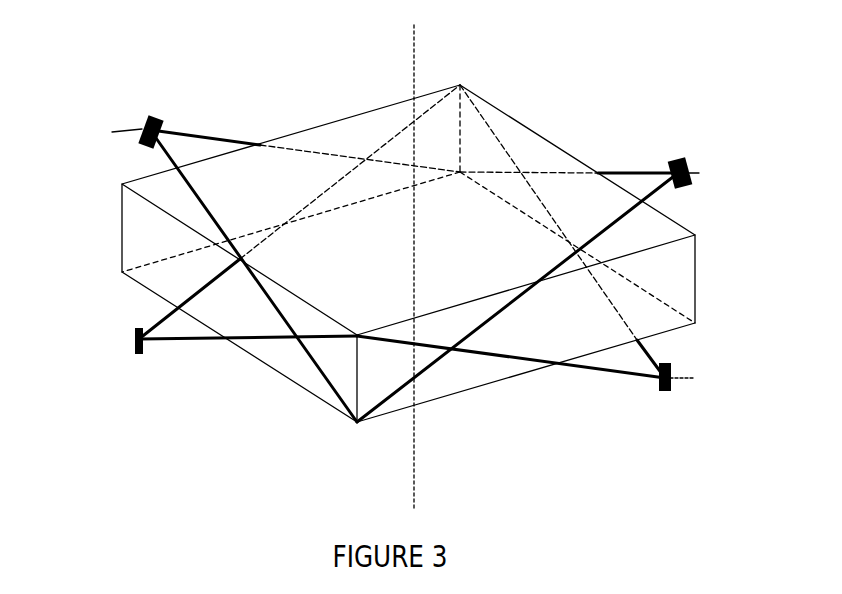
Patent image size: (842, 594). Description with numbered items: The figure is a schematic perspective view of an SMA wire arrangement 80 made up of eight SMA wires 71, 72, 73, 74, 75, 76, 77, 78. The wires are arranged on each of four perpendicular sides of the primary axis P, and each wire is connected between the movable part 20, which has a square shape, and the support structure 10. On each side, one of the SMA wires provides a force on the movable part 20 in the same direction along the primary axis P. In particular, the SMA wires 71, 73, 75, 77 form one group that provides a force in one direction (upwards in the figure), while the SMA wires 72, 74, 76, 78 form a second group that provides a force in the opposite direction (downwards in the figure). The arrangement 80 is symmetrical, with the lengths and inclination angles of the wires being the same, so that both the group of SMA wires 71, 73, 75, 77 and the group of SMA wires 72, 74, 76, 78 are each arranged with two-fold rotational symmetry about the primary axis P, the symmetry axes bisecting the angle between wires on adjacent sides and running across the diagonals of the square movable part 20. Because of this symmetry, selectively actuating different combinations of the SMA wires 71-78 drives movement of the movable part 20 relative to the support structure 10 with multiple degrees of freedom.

The support structure 10 is at (725, 208).
The movable part 20 is at (670, 278).
The SMA wire 71 is at (313, 384).
The SMA wire 72 is at (178, 343).
The SMA wire 73 is at (640, 172).
The SMA wire 74 is at (489, 128).
The SMA wire 75 is at (408, 410).
The SMA wire 76 is at (597, 377).
The SMA wire 77 is at (207, 134).
The SMA wire 78 is at (398, 133).
The arrangement 80 is at (80, 238).
The primary axis P is at (417, 254).